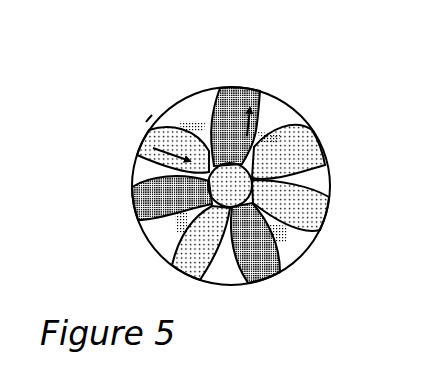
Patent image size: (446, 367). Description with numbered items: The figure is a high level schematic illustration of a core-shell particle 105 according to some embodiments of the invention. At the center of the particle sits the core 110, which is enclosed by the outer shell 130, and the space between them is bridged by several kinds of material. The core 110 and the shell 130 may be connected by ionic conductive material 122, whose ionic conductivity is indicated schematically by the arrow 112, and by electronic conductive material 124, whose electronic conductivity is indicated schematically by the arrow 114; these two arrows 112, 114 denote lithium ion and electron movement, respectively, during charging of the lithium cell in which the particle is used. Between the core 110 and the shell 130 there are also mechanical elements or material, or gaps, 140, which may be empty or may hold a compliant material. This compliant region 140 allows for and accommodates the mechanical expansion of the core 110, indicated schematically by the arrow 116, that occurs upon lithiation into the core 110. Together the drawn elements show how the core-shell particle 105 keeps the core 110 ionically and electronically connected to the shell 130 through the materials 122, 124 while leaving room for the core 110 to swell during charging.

The core-shell particle 105 is at (140, 40).
The core 110 is at (277, 178).
The arrow indicating ionic conductivity 112 is at (142, 147).
The arrow indicating electronic conductivity 114 is at (246, 90).
The arrow indicating mechanical expansion 116 is at (184, 106).
The ionic conductive material 122 is at (154, 123).
The electronic conductive material 124 is at (214, 98).
The shell 130 is at (286, 106).
The mechanical elements or gaps 140 is at (145, 172).